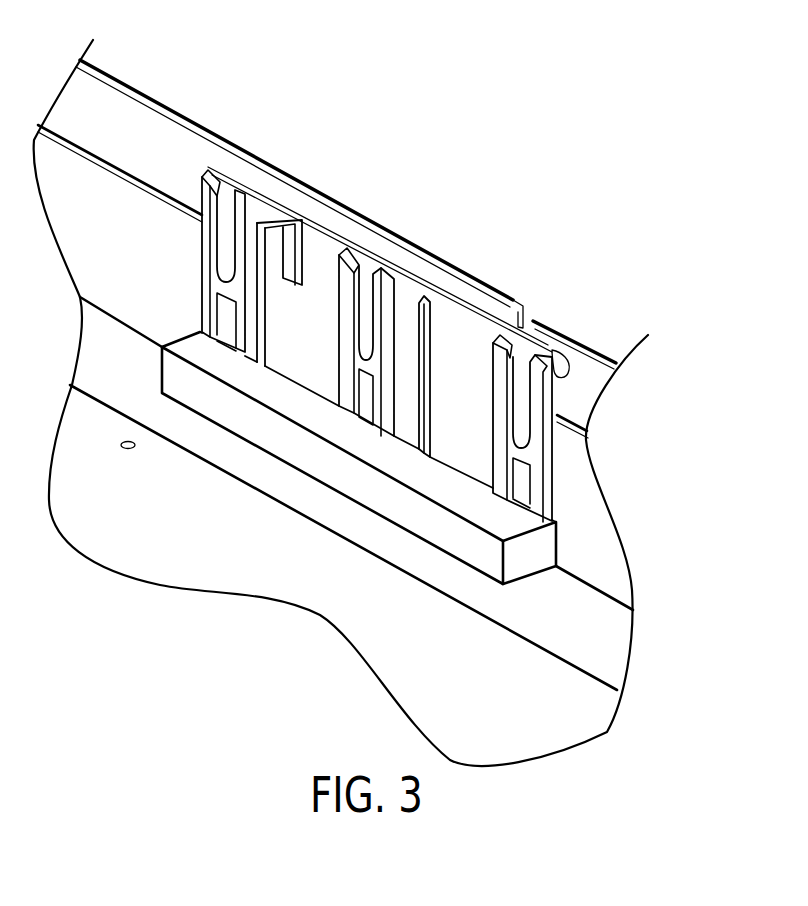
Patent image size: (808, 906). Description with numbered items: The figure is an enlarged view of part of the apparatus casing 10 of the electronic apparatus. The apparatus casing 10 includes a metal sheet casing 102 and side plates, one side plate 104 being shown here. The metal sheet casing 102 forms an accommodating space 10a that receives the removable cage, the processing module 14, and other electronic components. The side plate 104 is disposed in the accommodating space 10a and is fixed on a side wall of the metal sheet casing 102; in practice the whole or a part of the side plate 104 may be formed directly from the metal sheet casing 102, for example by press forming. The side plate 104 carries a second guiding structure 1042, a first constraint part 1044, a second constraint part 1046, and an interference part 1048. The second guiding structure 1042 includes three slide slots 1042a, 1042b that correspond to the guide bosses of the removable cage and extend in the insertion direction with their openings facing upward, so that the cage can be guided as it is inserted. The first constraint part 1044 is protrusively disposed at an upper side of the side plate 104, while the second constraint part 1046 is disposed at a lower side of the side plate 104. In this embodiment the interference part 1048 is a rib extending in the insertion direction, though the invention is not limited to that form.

The apparatus casing 10 is at (693, 137).
The accommodating space 10a is at (108, 232).
The processing module 14 is at (590, 705).
The metal sheet casing 102 is at (173, 138).
The side plate 104 is at (473, 440).
The second guiding structure 1042 is at (703, 270).
The slide slot 1042a is at (370, 277).
The slide slot 1042b is at (230, 205).
The first constraint part 1044 is at (283, 243).
The second constraint part 1046 is at (357, 470).
The interference part 1048 is at (427, 368).